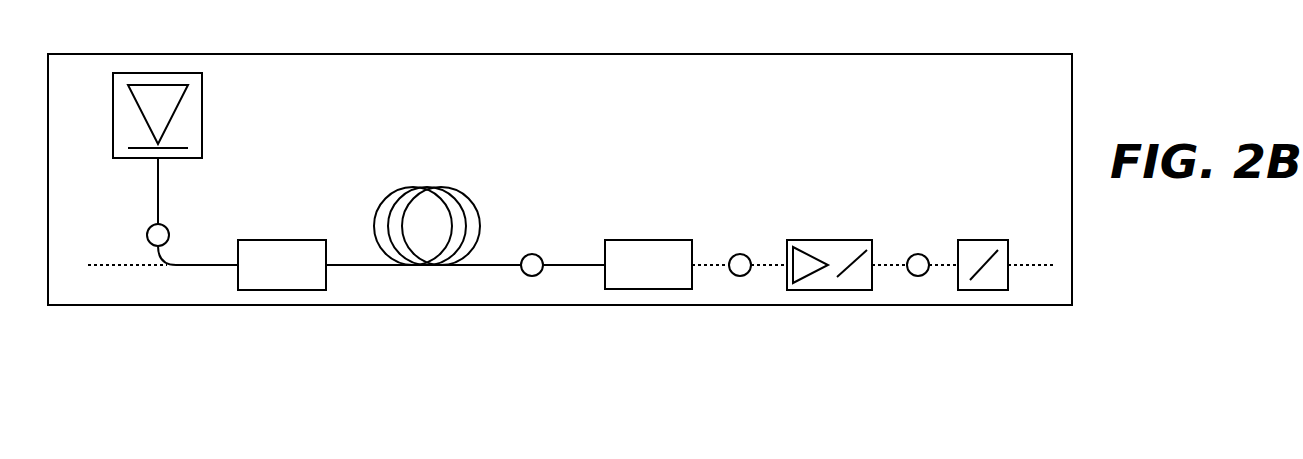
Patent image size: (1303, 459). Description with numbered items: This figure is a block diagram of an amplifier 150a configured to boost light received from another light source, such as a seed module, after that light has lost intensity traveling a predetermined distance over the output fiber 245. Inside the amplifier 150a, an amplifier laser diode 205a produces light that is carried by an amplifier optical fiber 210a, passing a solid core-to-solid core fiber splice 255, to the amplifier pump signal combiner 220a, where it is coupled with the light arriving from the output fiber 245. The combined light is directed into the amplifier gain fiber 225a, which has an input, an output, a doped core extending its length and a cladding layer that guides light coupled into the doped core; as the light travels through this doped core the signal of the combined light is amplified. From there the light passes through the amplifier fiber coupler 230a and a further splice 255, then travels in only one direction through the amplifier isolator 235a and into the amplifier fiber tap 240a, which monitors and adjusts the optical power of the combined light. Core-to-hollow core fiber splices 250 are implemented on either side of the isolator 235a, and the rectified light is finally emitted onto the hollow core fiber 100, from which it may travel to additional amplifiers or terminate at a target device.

The hollow core fiber 100 is at (1030, 265).
The amplifier 150a is at (1072, 120).
The amplifier laser diode 205a is at (202, 127).
The amplifier optical fiber 210a is at (155, 196).
The solid core-to-solid core fiber splice 255 is at (147, 240).
The output fiber 245 is at (107, 266).
The amplifier pump signal combiner 220a is at (277, 240).
The amplifier gain fiber 225a is at (453, 187).
The amplifier fiber coupler 230a is at (630, 238).
The core-to-hollow core fiber splice 250 is at (745, 255).
The amplifier isolator 235a is at (835, 238).
The amplifier fiber tap 240a is at (995, 240).